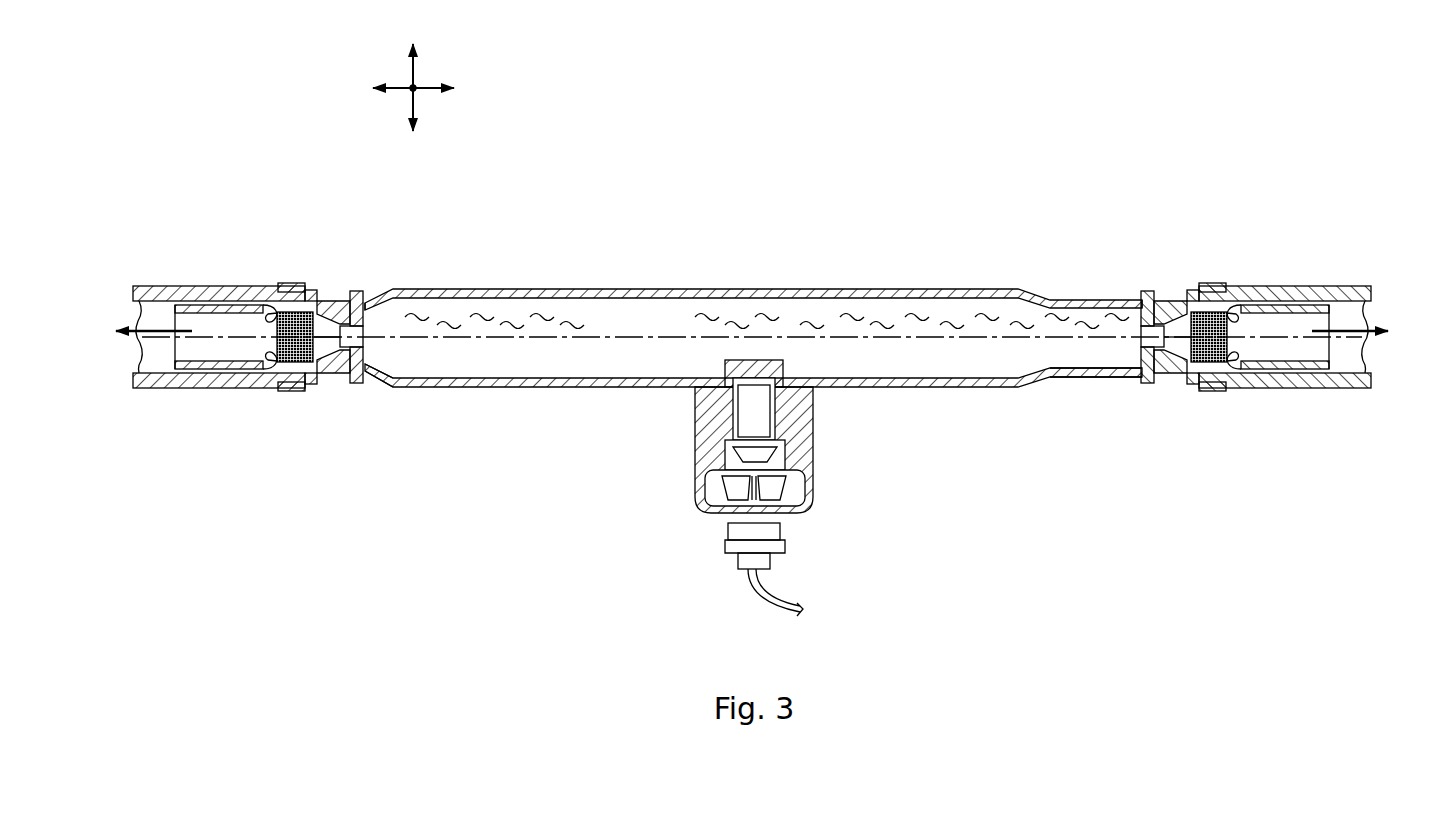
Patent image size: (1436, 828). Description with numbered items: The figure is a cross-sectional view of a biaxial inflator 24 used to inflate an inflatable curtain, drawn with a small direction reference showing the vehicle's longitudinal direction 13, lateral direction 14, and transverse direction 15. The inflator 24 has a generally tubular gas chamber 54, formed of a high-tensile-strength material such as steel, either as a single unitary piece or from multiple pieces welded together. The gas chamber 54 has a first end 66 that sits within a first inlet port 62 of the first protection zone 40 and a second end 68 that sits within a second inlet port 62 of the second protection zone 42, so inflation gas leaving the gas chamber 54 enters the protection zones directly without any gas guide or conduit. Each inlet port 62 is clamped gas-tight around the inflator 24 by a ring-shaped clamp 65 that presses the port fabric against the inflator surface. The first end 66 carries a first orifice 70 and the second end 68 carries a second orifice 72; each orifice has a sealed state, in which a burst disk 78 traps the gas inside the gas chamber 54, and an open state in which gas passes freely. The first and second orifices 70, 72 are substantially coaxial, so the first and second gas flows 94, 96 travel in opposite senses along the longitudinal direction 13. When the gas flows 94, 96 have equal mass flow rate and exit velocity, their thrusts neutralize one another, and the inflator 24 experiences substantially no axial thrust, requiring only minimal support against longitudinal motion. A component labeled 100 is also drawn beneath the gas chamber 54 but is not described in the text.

The longitudinal direction 13 is at (433, 92).
The lateral direction 14 is at (410, 90).
The transverse direction 15 is at (415, 72).
The biaxial inflator 24 is at (823, 199).
The first protection zone 40 is at (1355, 264).
The second protection zone 42 is at (150, 264).
The gas chamber 54 is at (630, 282).
The inlet port 62 is at (243, 290).
The ring-shaped clamp 65 is at (290, 391).
The first end 66 is at (1063, 378).
The second end 68 is at (381, 390).
The first orifice 70 is at (1134, 322).
The second orifice 72 is at (376, 318).
The burst disk 78 is at (364, 348).
The first gas flow 94 is at (1380, 284).
The second gas flow 96 is at (124, 284).
The pressure sensor 100 is at (813, 513).